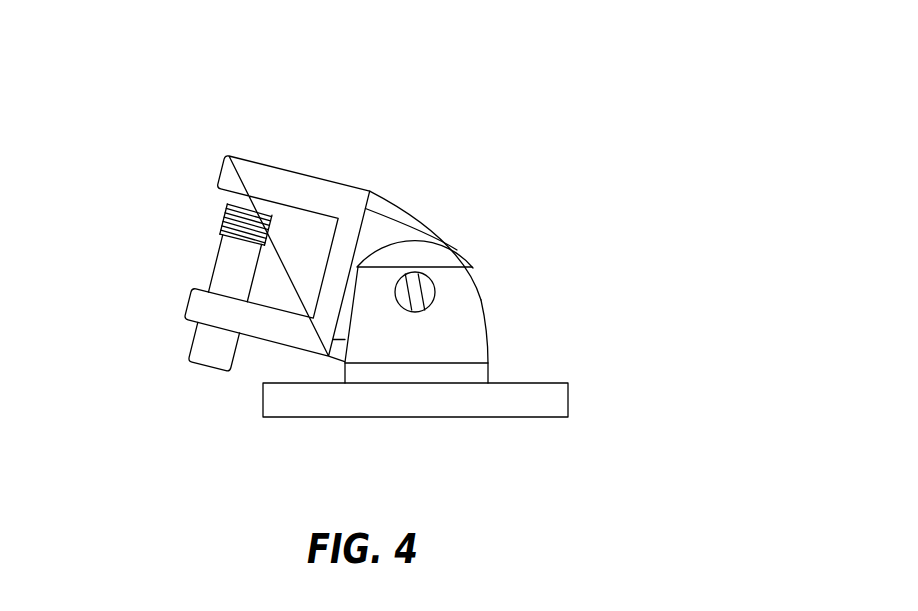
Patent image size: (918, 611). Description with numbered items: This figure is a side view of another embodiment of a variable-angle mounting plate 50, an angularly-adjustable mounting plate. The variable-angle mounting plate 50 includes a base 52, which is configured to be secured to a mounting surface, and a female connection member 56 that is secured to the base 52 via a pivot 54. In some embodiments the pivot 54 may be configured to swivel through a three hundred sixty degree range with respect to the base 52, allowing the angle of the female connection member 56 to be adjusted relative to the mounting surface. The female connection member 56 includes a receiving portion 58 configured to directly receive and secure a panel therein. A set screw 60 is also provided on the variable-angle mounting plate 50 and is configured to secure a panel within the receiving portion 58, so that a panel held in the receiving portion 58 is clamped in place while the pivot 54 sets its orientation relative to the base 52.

The variable-angle mounting plate 50 is at (582, 188).
The base 52 is at (557, 398).
The pivot 54 is at (487, 283).
The female connection member 56 is at (305, 180).
The receiving portion 58 is at (202, 233).
The set screw 60 is at (208, 353).